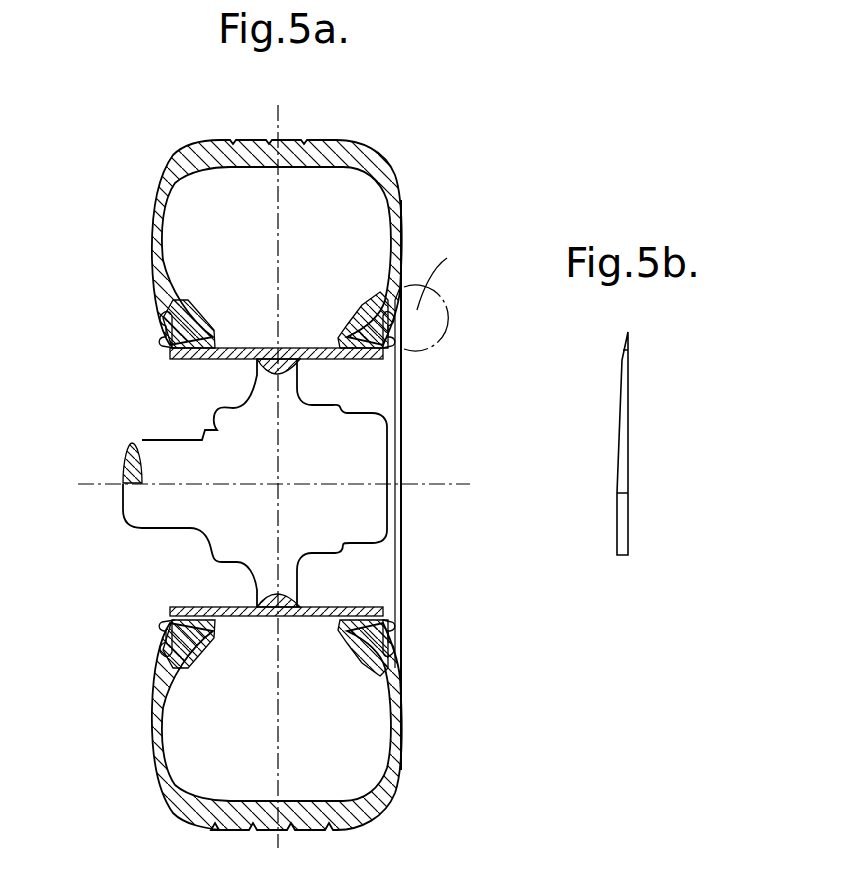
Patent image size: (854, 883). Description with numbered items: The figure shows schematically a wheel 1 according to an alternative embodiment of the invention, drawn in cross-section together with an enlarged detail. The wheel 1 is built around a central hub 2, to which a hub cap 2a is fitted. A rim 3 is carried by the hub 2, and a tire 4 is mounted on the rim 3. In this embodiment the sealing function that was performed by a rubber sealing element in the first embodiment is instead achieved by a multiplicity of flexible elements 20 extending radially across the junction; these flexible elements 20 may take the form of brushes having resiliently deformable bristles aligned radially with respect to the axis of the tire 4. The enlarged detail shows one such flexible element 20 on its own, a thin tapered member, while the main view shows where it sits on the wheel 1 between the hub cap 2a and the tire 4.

In FIG. 5A, the wheel 1 is at (124, 150).
In FIG. 5A, the hub 2 is at (328, 461).
In FIG. 5A, the hub cap 2a is at (397, 436).
In FIG. 5A, the rim 3 is at (172, 613).
In FIG. 5A, the tire 4 is at (314, 157).
In FIG. 5B, the flexible element 20 is at (623, 438).